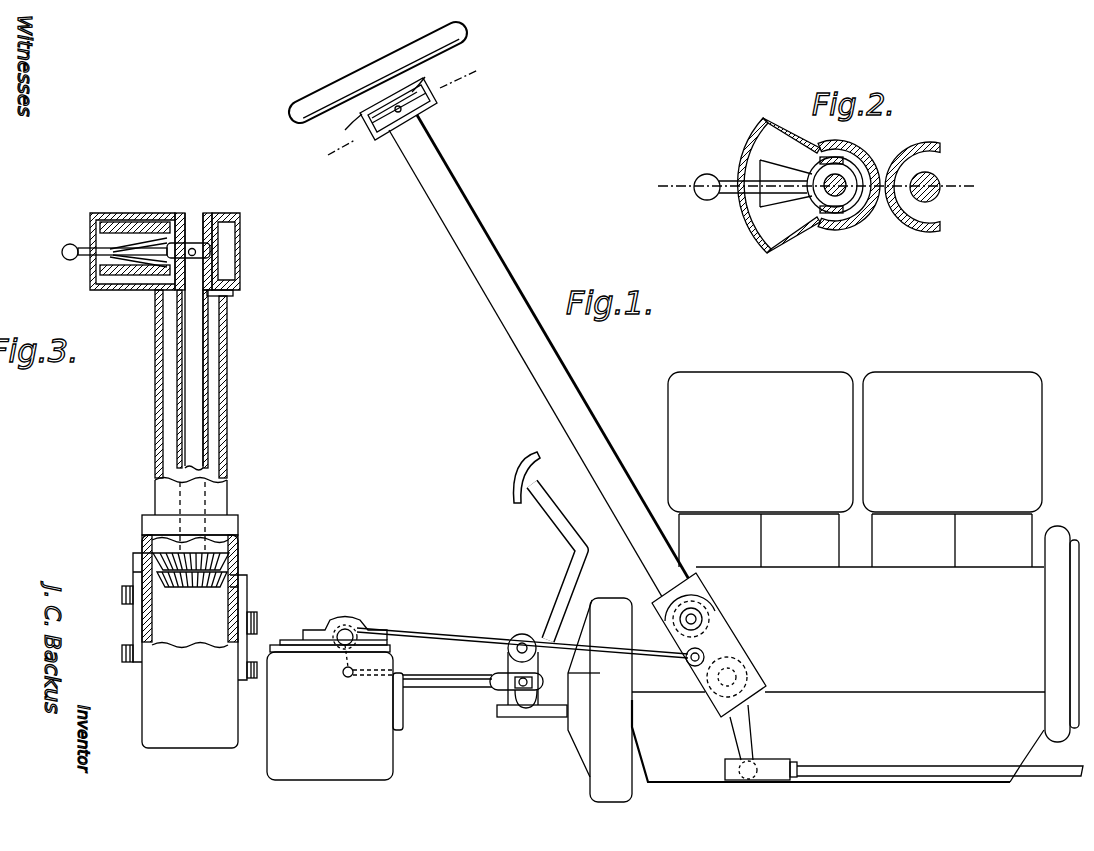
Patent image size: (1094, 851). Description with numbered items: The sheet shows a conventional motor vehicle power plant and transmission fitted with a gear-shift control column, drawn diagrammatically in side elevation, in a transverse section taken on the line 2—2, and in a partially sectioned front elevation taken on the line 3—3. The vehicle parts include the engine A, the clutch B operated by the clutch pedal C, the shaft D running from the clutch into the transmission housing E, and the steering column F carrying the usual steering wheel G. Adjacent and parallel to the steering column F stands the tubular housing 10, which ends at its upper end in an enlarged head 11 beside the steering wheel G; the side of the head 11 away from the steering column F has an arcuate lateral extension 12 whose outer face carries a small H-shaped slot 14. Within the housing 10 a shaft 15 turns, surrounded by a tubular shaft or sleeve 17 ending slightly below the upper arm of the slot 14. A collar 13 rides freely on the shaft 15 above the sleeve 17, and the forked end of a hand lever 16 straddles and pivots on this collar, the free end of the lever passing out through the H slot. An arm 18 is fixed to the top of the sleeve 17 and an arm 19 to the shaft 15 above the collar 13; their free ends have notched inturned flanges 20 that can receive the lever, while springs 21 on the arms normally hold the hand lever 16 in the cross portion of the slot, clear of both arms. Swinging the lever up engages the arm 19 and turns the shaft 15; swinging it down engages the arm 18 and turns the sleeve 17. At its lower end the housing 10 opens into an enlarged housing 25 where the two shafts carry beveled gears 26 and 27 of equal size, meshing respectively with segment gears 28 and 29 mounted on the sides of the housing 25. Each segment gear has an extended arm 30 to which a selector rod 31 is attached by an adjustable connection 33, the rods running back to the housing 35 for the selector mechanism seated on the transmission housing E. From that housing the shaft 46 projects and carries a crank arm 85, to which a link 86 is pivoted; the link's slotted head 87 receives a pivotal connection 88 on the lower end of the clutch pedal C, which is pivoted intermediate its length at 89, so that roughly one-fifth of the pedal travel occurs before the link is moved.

In FIG. 1, the section line 2— 2 is at (401, 111).
In FIG. 2, the section line 3— 3 is at (806, 189).
In FIG. 1, the tubular housing 10 is at (578, 384).
In FIG. 2, the tubular housing 10 is at (862, 224).
In FIG. 3, the tubular housing 10 is at (225, 500).
In FIG. 1, the enlarged head 11 is at (426, 100).
In FIG. 2, the enlarged head 11 is at (806, 226).
In FIG. 3, the enlarged head 11 is at (222, 226).
In FIG. 2, the arcuate lateral extension 12 is at (757, 122).
In FIG. 3, the arcuate lateral extension 12 is at (101, 224).
In FIG. 3, the collar 13 is at (212, 253).
In FIG. 1, the H-shaped slot 14 is at (430, 107).
In FIG. 3, the shaft 15 is at (195, 382).
In FIG. 3, the hand lever 16 is at (70, 260).
In FIG. 3, the tubular shaft or sleeve 17 is at (210, 403).
In FIG. 3, the arm 18 is at (140, 276).
In FIG. 3, the arm 19 is at (150, 236).
In FIG. 2, the inturned flanges 20 is at (743, 171).
In FIG. 3, the springs 21 is at (125, 248).
In FIG. 1, the enlarged housing 25 is at (733, 629).
In FIG. 3, the enlarged housing 25 is at (190, 631).
In FIG. 3, the beveled gear 26 is at (210, 589).
In FIG. 3, the beveled gear 27 is at (175, 585).
In FIG. 3, the segment gear 28 is at (241, 594).
In FIG. 3, the segment gear 29 is at (133, 575).
In FIG. 3, the extended arm 30 is at (243, 648).
In FIG. 1, the selector rod 31 is at (477, 642).
In FIG. 1, the adjustable connection 33 is at (684, 666).
In FIG. 1, the housing for the selector mechanism 35 is at (332, 622).
In FIG. 1, the shaft 46 is at (352, 630).
In FIG. 1, the crank arm 85 is at (342, 668).
In FIG. 1, the link 86 is at (447, 667).
In FIG. 1, the slotted head 87 is at (505, 692).
In FIG. 1, the pivotal connection 88 is at (527, 710).
In FIG. 1, the pivot 89 is at (521, 645).
In FIG. 1, the engine A is at (857, 577).
In FIG. 1, the clutch B is at (582, 735).
In FIG. 1, the clutch pedal C is at (548, 522).
In FIG. 1, the shaft D is at (462, 695).
In FIG. 1, the transmission housing E is at (335, 710).
In FIG. 2, the steering column F is at (920, 226).
In FIG. 1, the steering wheel G is at (366, 70).